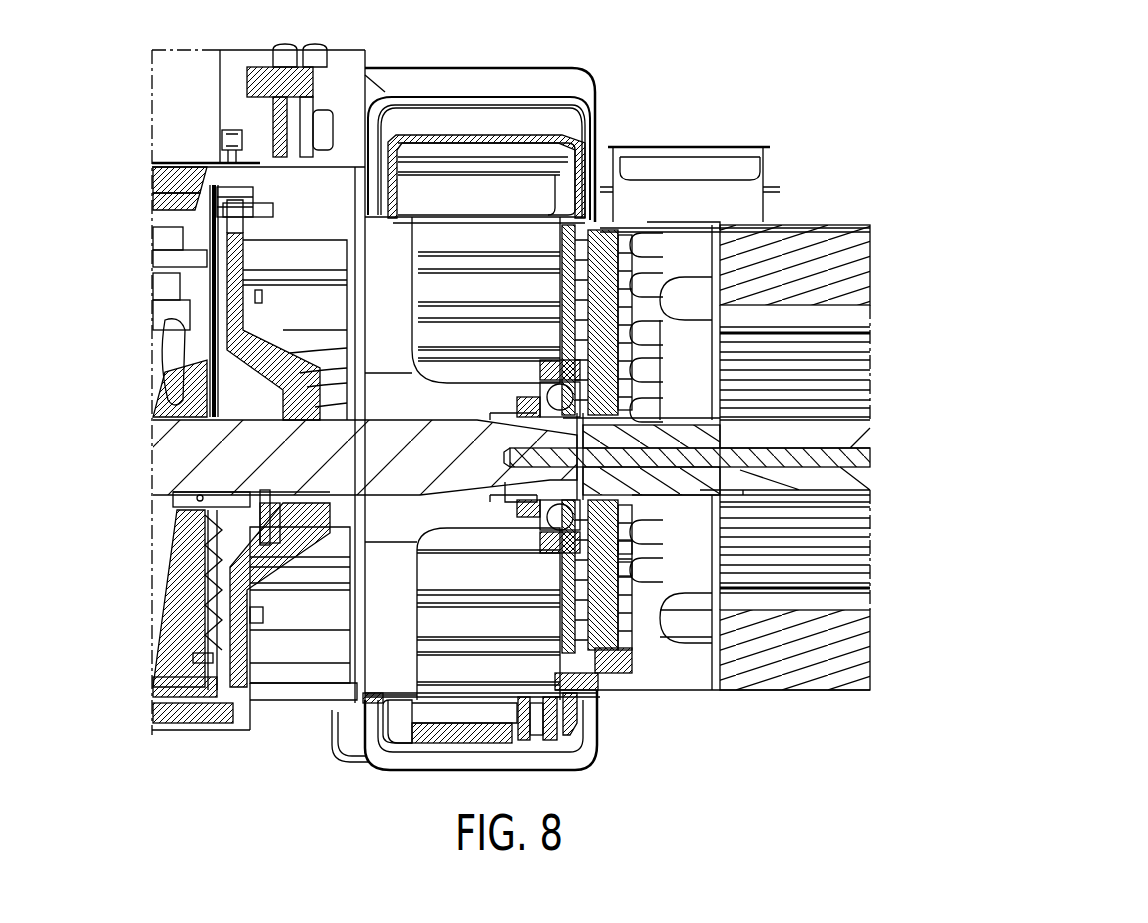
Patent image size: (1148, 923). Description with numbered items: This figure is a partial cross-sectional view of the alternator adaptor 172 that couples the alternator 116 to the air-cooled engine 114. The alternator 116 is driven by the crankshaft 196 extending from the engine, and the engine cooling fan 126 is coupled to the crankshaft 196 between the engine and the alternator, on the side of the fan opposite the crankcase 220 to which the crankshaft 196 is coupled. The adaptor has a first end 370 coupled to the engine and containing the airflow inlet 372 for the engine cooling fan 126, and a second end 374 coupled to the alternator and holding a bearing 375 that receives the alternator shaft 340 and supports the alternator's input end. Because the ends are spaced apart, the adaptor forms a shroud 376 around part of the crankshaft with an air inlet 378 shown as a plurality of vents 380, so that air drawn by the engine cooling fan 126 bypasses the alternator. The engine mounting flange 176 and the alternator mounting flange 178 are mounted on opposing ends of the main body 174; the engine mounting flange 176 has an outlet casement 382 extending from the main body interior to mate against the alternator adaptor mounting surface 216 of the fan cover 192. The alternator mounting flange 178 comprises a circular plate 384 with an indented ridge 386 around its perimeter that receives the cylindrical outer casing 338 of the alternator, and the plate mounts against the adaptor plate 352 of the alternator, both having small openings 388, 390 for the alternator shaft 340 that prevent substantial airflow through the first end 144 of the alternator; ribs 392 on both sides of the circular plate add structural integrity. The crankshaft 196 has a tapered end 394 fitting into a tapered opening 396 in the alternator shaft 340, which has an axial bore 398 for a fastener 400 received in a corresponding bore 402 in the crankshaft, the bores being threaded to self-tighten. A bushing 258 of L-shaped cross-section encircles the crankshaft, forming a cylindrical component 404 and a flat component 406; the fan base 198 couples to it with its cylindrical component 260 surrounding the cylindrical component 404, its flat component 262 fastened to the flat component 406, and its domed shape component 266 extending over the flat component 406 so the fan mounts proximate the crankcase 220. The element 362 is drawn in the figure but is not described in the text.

The engine 114 is at (165, 740).
The alternator 116 is at (770, 722).
The engine cooling fan 126 is at (320, 255).
The first end of the alternator 144 is at (627, 700).
The alternator adaptor 172 is at (397, 777).
The main body 174 is at (482, 137).
The engine mounting flange 176 is at (375, 232).
The alternator mounting flange 178 is at (607, 222).
The fan cover 192 is at (303, 250).
The crankshaft 196 is at (416, 478).
The fan base 198 is at (233, 573).
The alternator adaptor mounting surface 216 is at (370, 675).
The crankcase 220 is at (160, 167).
The bushing 258 is at (273, 502).
The cylindrical component of the fan base 260 is at (295, 420).
The flat component of the fan base 262 is at (293, 390).
The domed shape component of the fan base 266 is at (267, 353).
The cylindrical outer casing 338 is at (805, 225).
The alternator shaft 340 is at (805, 445).
The adaptor plate 352 is at (617, 650).
The cover 362 is at (689, 73).
The first end 370 is at (323, 763).
The airflow inlet 372 is at (367, 614).
The second end 374 is at (602, 700).
The bearing 375 is at (540, 522).
The shroud 376 is at (527, 132).
The air inlet 378 is at (532, 163).
The vents 380 is at (680, 230).
The outlet casement 382 is at (420, 240).
The circular plate 384 is at (634, 336).
The indented ridge 386 is at (620, 230).
The opening 388 is at (645, 438).
The opening 390 is at (628, 485).
The ribs 392 is at (633, 570).
The tapered end 394 is at (508, 490).
The tapered opening 396 is at (630, 547).
The bore 398 is at (875, 455).
The fastener 400 is at (805, 462).
The bore 402 is at (495, 457).
The cylindrical component of the bushing 404 is at (297, 493).
The flat component of the bushing 406 is at (267, 530).